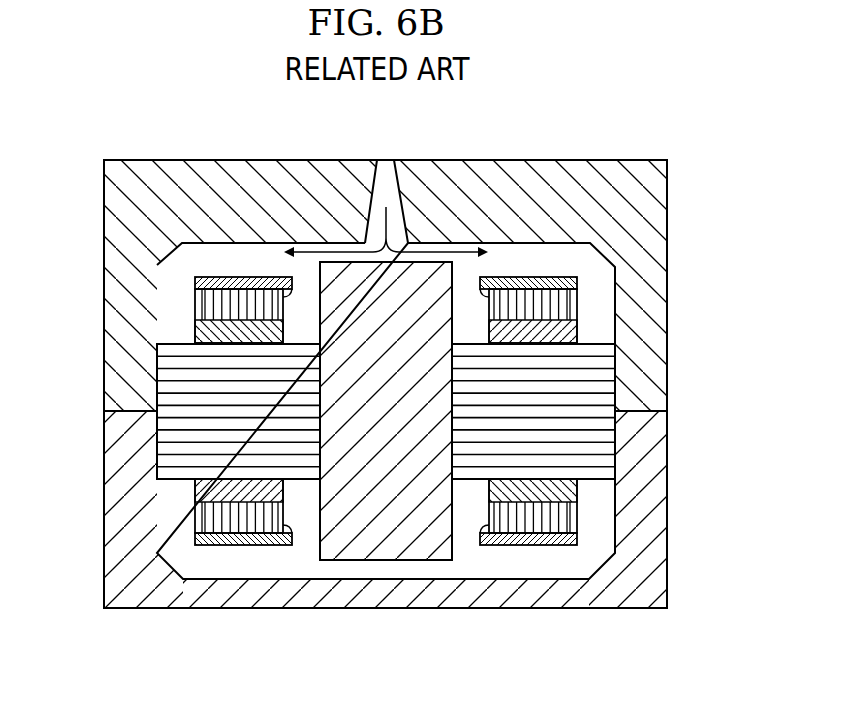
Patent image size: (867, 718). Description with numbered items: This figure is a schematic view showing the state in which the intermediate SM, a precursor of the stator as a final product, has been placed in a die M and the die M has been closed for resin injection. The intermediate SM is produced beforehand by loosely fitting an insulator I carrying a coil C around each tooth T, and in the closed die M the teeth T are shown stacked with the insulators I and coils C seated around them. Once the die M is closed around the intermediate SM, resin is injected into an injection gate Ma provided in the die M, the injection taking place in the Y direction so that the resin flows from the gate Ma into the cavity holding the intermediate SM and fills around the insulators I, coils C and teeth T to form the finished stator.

The die M is at (128, 232).
The injection gate Ma is at (384, 165).
The Y direction Y is at (389, 225).
The insulator I is at (242, 277).
The intermediate SM is at (606, 305).
The tooth T is at (172, 386).
The coil C is at (238, 517).